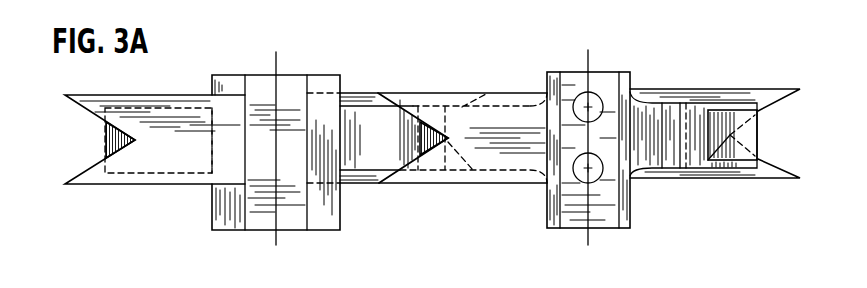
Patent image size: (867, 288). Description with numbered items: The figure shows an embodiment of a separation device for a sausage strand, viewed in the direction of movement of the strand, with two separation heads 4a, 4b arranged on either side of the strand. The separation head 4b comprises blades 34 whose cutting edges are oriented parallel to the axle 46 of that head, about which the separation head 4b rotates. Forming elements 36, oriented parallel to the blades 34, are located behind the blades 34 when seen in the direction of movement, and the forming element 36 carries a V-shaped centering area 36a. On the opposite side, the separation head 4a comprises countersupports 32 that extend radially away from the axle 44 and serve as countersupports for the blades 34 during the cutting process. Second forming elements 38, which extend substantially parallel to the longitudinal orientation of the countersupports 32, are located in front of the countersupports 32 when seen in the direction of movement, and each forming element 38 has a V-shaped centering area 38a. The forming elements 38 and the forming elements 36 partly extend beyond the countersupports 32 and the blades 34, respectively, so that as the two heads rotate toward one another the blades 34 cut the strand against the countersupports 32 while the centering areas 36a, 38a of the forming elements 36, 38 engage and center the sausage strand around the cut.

The second forming element 38 is at (83, 185).
The V-shaped centering area 38a is at (110, 146).
The countersupport 32 is at (158, 165).
The axle 44 is at (277, 243).
The separation head 4a is at (252, 56).
The blade 34 is at (490, 150).
The V-shaped centering area 36a is at (448, 139).
The axle 46 is at (589, 233).
The separation head 4b is at (578, 56).
The forming element 36 is at (753, 179).